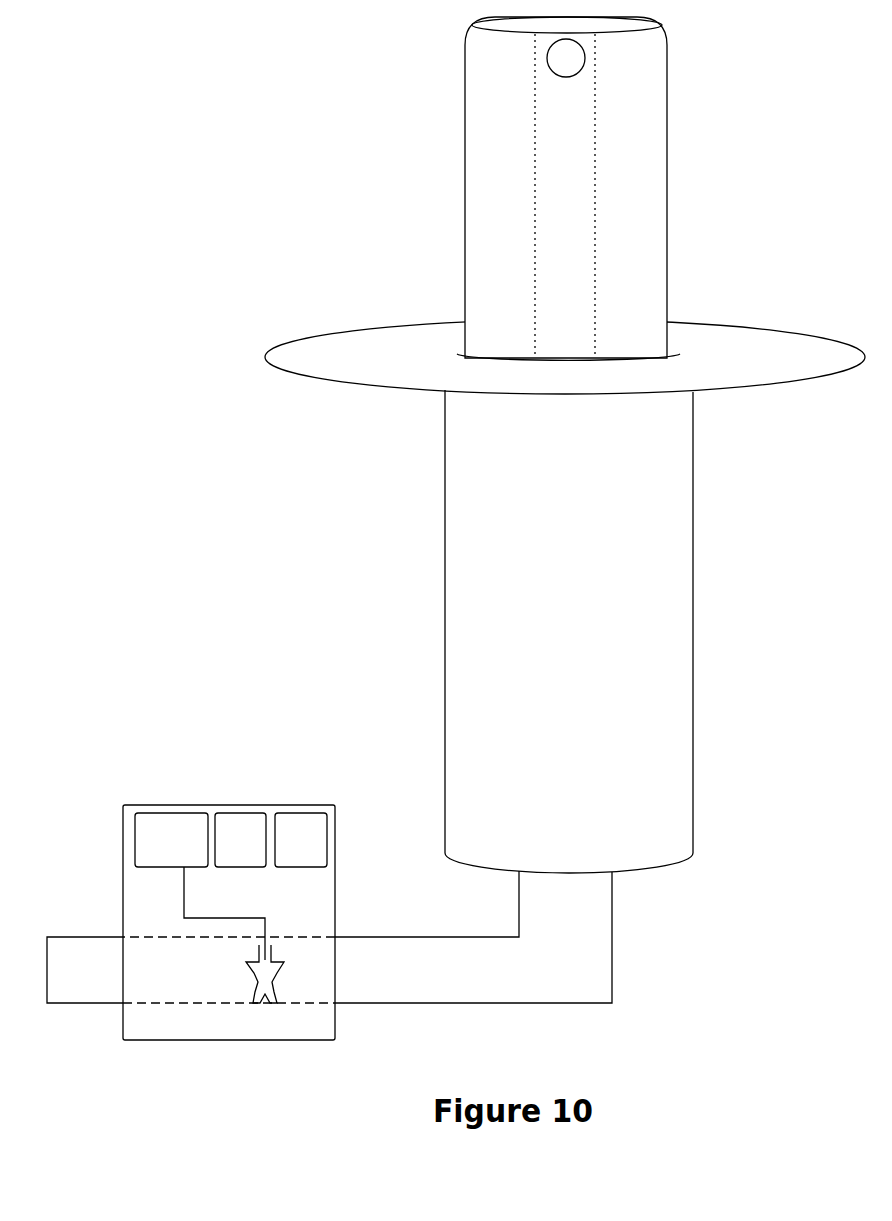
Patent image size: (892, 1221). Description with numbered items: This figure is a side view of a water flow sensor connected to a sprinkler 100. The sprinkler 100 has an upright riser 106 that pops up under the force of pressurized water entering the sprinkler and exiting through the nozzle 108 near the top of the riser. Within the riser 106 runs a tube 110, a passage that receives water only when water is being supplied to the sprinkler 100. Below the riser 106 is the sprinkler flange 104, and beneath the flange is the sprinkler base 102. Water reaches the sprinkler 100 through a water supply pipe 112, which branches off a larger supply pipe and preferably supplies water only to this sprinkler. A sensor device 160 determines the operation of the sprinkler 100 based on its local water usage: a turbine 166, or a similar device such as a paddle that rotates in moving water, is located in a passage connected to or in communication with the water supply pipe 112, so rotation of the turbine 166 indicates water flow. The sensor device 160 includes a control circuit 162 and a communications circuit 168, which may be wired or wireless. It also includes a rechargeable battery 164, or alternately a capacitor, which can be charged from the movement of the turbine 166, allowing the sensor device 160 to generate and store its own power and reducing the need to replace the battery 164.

The sprinkler 100 is at (329, 489).
The sprinkler base 102 is at (665, 688).
The sprinkler flange 104 is at (358, 375).
The riser 106 is at (483, 282).
The nozzle 108 is at (548, 70).
The tube 110 is at (597, 203).
The water supply pipe 112 is at (595, 962).
The sensor device 160 is at (123, 897).
The control circuit 162 is at (183, 830).
The rechargeable battery 164 is at (293, 830).
The turbine 166 is at (265, 1030).
The communications circuit 168 is at (237, 830).